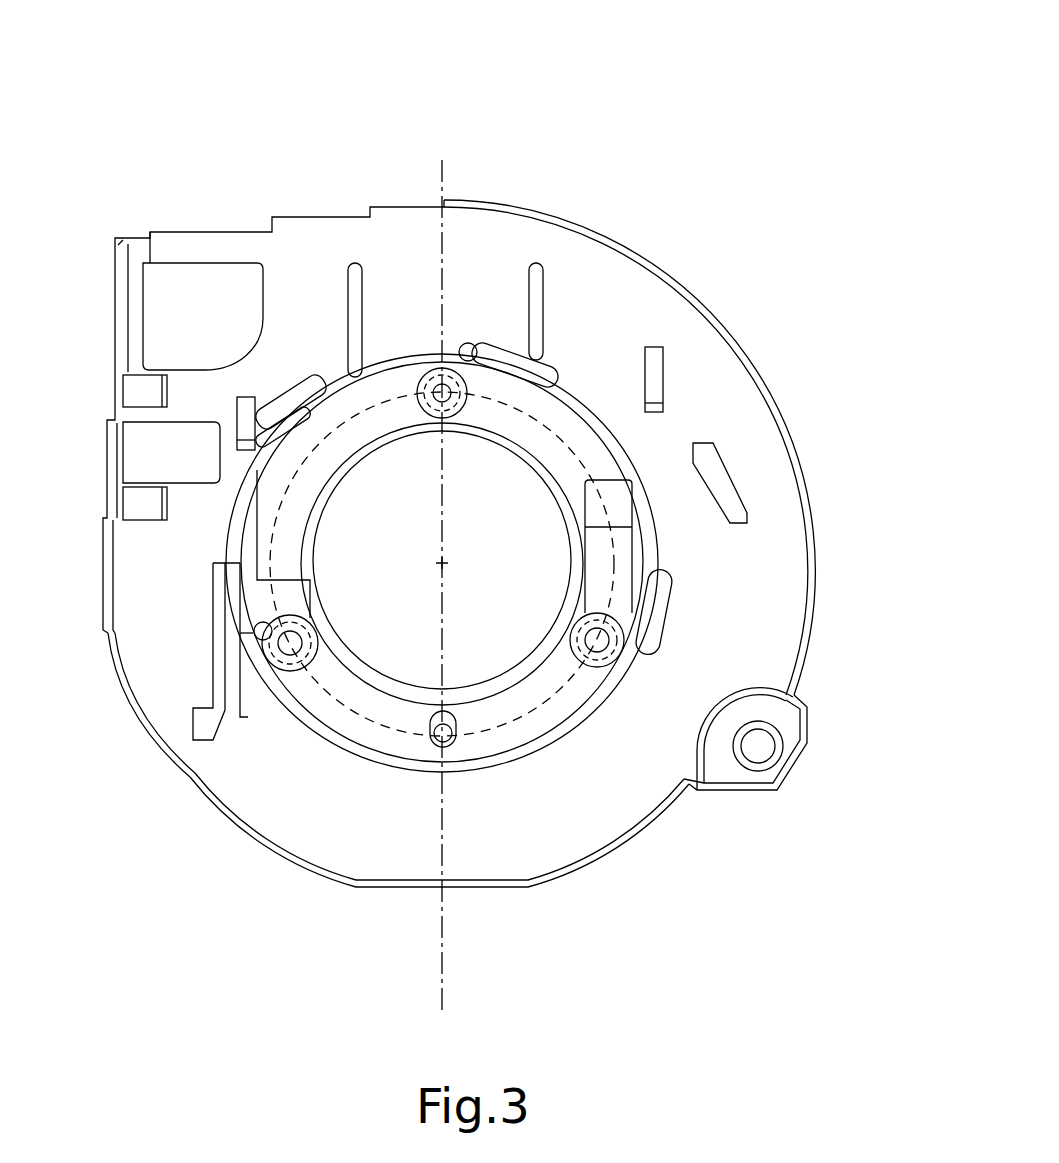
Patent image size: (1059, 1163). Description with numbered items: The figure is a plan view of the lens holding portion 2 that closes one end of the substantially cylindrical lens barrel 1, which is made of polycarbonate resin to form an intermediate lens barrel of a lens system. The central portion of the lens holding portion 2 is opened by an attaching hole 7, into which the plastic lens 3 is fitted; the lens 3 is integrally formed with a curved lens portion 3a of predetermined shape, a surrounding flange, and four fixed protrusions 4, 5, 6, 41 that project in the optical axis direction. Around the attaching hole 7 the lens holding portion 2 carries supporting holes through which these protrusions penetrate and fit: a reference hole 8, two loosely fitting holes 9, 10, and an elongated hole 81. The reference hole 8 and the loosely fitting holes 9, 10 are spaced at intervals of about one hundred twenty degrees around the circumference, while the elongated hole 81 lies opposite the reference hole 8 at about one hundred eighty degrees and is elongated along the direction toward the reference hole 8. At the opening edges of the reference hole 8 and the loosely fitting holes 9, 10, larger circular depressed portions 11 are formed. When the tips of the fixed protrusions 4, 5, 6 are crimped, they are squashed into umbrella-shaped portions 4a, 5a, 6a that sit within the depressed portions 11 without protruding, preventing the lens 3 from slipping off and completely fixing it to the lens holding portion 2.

The lens barrel 1 is at (705, 135).
The lens holding portion 2 is at (350, 410).
The lens 3 is at (290, 412).
The lens portion 3a is at (523, 483).
The fixed protrusion 4 is at (441, 382).
The umbrella-shaped portion 4a is at (505, 485).
The fixed protrusion 5 is at (287, 643).
The umbrella-shaped portion 5a is at (195, 773).
The fixed protrusion 6 is at (617, 640).
The umbrella-shaped portion 6a is at (600, 635).
The attaching hole 7 is at (505, 472).
The reference hole 8 is at (430, 372).
The elongated hole 81 is at (433, 717).
The loosely fitting hole 9 is at (285, 640).
The loosely fitting hole 10 is at (603, 653).
The depressed portion 11 is at (472, 365).
The fixed protrusion 41 is at (432, 738).